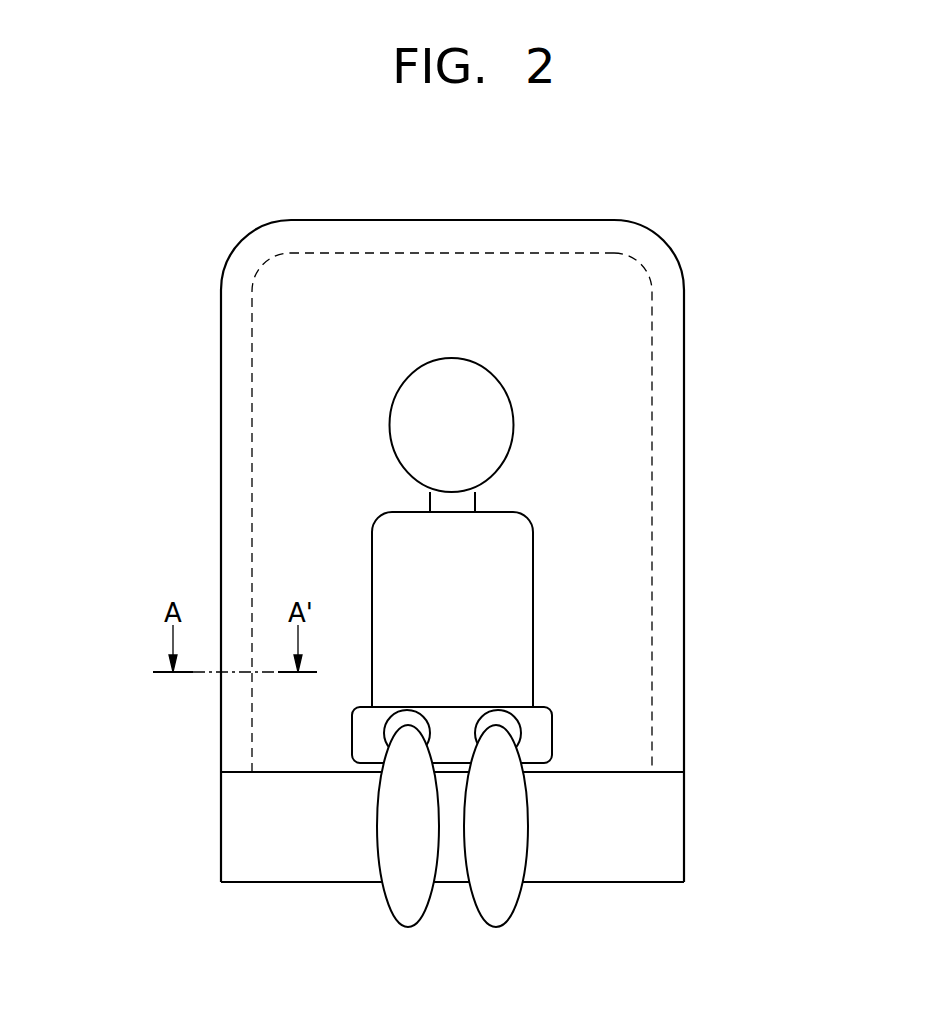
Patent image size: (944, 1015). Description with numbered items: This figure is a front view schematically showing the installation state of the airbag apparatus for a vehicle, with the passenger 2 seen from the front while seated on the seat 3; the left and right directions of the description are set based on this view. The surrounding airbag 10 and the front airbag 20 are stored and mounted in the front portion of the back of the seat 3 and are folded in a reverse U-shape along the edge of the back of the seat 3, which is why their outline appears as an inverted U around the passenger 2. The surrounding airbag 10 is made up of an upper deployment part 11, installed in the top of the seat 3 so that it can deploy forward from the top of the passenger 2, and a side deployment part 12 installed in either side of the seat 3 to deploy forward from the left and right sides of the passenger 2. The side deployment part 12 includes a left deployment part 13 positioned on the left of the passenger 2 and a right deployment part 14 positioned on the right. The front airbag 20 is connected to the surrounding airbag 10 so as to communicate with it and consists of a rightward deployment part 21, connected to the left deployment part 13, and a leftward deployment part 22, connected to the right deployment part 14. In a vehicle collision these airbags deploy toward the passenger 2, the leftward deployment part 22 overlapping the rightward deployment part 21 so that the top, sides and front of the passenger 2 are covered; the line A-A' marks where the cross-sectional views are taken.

The passenger 2 is at (500, 612).
The seat 3 is at (288, 524).
The surrounding airbag 10 is at (458, 510).
The front airbag 20 is at (458, 510).
The upper deployment part 11 is at (421, 235).
The side deployment part 12 is at (444, 551).
The left deployment part 13 is at (171, 551).
The right deployment part 14 is at (725, 551).
The rightward deployment part 21 is at (235, 389).
The leftward deployment part 22 is at (665, 388).